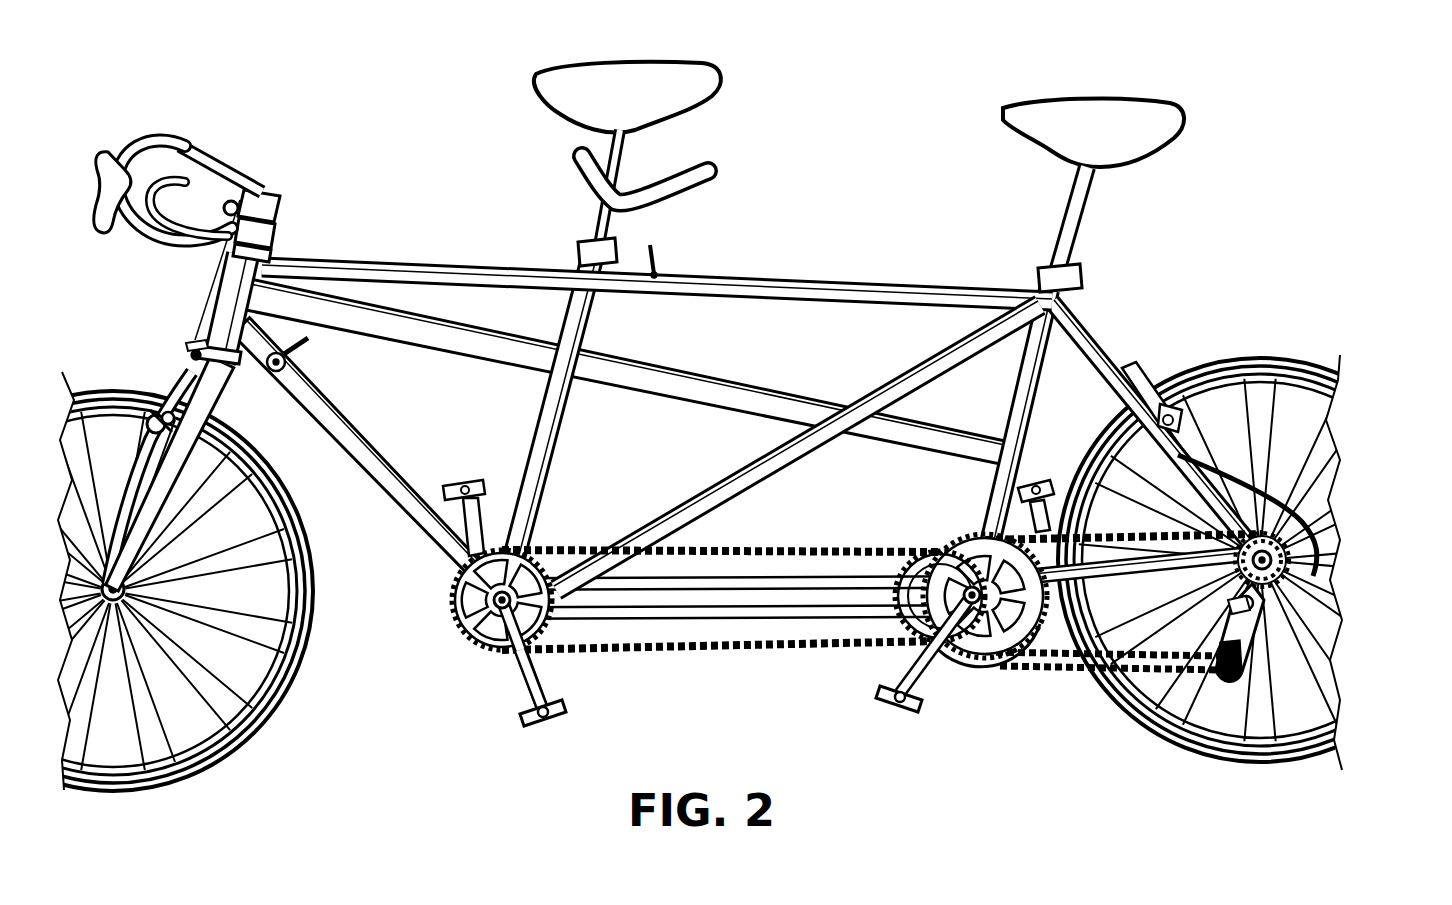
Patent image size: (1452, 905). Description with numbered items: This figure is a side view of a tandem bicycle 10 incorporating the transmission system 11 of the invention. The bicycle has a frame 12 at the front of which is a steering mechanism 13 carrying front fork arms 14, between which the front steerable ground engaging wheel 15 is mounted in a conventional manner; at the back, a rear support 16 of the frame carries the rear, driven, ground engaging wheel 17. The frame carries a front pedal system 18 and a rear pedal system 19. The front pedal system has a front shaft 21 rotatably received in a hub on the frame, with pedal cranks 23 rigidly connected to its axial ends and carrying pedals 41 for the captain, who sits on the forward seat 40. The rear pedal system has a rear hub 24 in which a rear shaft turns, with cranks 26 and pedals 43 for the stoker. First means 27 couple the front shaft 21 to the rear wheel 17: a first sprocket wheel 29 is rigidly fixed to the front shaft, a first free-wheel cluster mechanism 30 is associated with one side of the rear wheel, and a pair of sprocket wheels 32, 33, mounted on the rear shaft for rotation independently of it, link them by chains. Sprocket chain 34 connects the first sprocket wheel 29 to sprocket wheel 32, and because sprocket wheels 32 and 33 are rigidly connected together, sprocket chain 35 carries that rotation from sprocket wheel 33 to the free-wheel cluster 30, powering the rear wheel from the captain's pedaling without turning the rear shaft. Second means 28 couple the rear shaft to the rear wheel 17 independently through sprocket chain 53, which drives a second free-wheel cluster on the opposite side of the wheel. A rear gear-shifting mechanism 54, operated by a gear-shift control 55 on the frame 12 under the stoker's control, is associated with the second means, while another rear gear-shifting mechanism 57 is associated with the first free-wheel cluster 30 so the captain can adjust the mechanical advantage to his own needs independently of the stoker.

The tandem bicycle 10 is at (876, 118).
The transmission system 11 is at (770, 662).
The frame 12 is at (862, 283).
The steering mechanism 13 is at (226, 286).
The front fork arms 14 is at (193, 392).
The front steerable ground engaging wheel 15 is at (302, 612).
The rear support 16 is at (1108, 347).
The rear driven ground engaging wheel 17 is at (1238, 362).
The front pedal system 18 is at (555, 522).
The rear pedal system 19 is at (967, 514).
The front shaft 21 is at (500, 653).
The pedal cranks 23 is at (533, 687).
The rear hub 24 is at (940, 537).
The cranks 26 is at (913, 675).
The first means 27 is at (720, 547).
The second means 28 is at (1073, 672).
The first sprocket wheel 29 is at (467, 633).
The first free-wheel cluster mechanism 30 is at (1282, 571).
The sprocket wheel 32 is at (972, 644).
The sprocket wheel 33 is at (910, 567).
The sprocket chain 34 is at (712, 652).
The sprocket chain 35 is at (1050, 670).
The forward seat 40 is at (703, 80).
The pedals 41 is at (556, 711).
The pedals 43 is at (922, 708).
The sprocket chain 53 is at (1160, 672).
The rear gear-shifting mechanism 54 is at (1287, 553).
The gear-shift control 55 is at (660, 250).
The rear gear-shifting mechanism 57 is at (1243, 642).